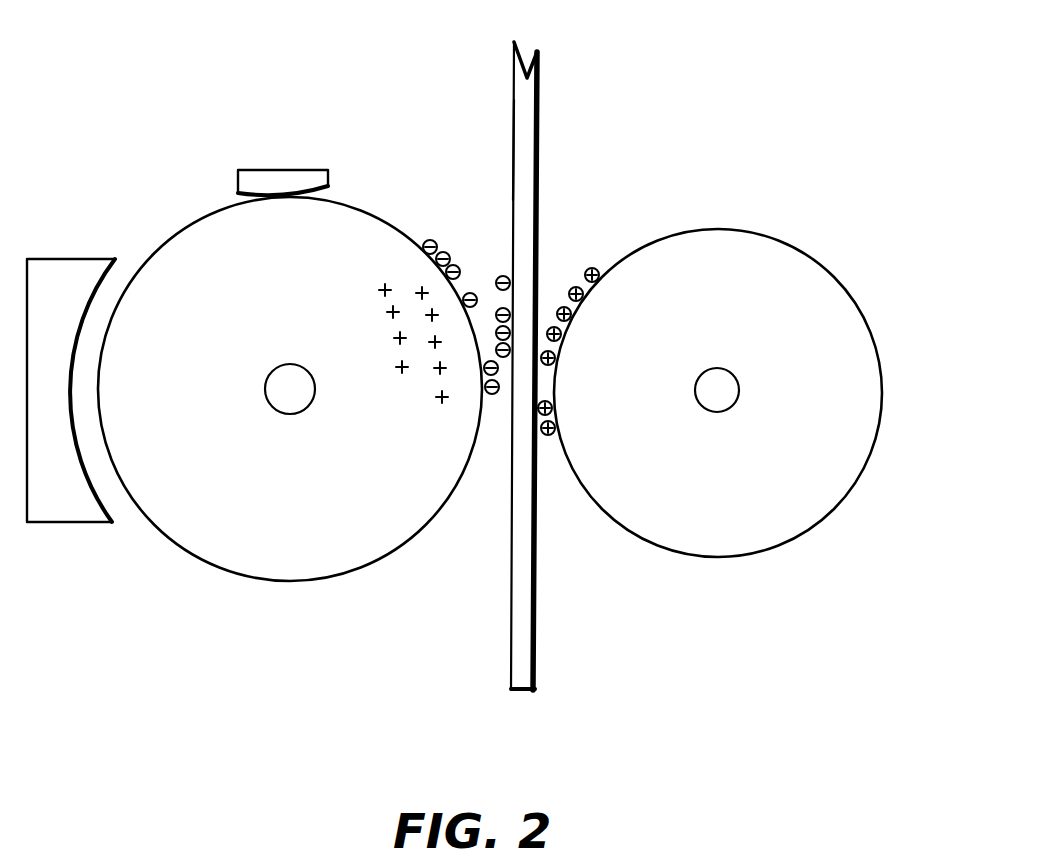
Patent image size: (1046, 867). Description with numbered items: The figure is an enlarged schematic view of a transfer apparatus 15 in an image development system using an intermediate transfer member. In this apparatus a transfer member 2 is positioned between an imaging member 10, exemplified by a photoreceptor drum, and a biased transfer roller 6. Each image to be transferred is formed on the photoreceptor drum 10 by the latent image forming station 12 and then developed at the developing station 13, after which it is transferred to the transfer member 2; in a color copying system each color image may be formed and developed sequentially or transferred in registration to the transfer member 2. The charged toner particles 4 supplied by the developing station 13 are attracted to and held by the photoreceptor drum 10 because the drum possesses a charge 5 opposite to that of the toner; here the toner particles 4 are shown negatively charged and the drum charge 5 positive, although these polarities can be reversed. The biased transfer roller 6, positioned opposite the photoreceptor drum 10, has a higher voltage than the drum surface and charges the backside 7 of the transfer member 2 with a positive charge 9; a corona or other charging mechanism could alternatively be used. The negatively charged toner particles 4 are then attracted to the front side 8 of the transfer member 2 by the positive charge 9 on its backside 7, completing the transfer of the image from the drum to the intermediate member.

The transfer member 2 is at (527, 167).
The toner particles 4 is at (437, 242).
The charge 5 is at (385, 288).
The transfer roller 6 is at (667, 540).
The backside 7 is at (540, 80).
The front side 8 is at (513, 145).
The positive charge 9 is at (594, 268).
The imaging member 10 is at (265, 568).
The image forming station 12 is at (75, 273).
The developing station 13 is at (285, 175).
The transfer apparatus 15 is at (683, 134).